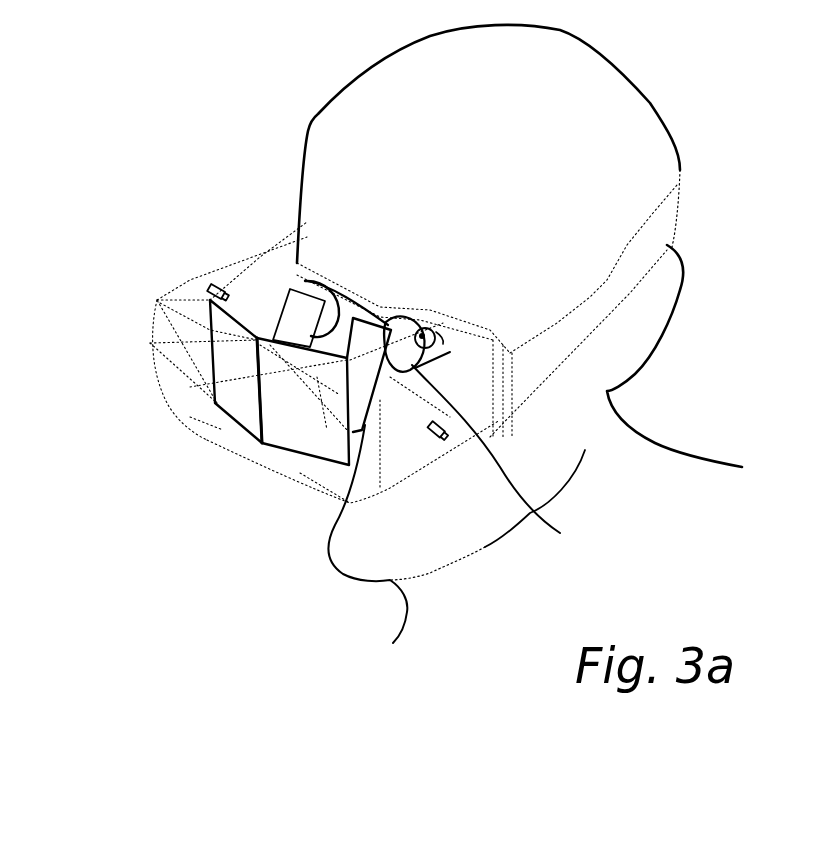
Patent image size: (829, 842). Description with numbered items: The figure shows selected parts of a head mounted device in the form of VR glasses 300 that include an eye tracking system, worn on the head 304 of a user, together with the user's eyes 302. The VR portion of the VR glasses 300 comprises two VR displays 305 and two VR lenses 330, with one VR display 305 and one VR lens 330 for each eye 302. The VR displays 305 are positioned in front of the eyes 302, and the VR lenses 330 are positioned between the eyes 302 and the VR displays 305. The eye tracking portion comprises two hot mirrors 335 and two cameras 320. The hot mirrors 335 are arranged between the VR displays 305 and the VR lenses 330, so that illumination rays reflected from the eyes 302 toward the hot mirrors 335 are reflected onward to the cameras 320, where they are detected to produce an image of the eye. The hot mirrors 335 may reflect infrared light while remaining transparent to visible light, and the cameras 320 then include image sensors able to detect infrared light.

The VR glasses 300 is at (153, 310).
The eyes 302 is at (323, 288).
The head 304 is at (652, 104).
The VR displays 305 is at (237, 413).
The cameras 320 is at (215, 285).
The VR lenses 330 is at (348, 298).
The hot mirrors 335 is at (320, 338).